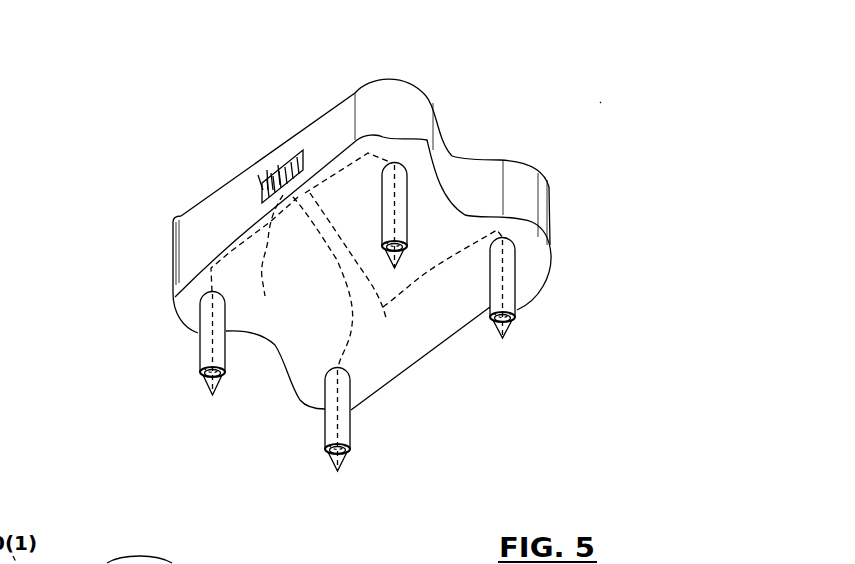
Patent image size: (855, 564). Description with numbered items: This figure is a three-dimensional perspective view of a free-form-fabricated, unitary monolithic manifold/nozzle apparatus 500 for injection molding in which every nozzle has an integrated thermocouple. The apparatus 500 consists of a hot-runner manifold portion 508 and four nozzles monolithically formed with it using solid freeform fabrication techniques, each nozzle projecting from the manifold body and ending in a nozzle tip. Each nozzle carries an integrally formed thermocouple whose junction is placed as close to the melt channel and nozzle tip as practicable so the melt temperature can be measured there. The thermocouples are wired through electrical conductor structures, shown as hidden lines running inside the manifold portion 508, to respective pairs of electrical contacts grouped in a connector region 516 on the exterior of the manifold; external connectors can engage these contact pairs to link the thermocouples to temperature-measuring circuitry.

The unitary monolithic manifold/nozzle apparatus 500 is at (603, 100).
The hot-runner manifold portion 508 is at (168, 250).
The connector region 516 is at (310, 163).